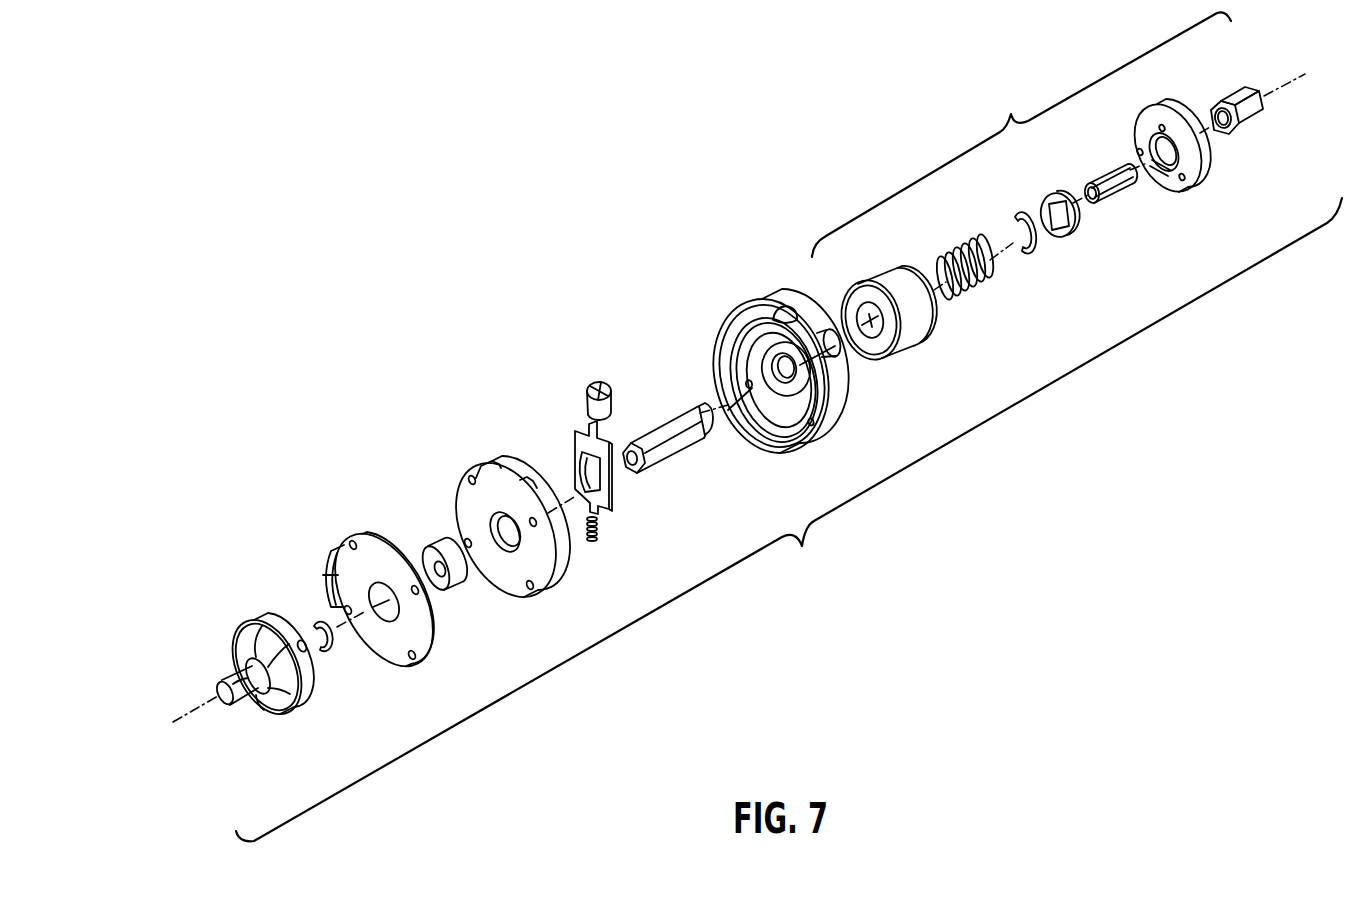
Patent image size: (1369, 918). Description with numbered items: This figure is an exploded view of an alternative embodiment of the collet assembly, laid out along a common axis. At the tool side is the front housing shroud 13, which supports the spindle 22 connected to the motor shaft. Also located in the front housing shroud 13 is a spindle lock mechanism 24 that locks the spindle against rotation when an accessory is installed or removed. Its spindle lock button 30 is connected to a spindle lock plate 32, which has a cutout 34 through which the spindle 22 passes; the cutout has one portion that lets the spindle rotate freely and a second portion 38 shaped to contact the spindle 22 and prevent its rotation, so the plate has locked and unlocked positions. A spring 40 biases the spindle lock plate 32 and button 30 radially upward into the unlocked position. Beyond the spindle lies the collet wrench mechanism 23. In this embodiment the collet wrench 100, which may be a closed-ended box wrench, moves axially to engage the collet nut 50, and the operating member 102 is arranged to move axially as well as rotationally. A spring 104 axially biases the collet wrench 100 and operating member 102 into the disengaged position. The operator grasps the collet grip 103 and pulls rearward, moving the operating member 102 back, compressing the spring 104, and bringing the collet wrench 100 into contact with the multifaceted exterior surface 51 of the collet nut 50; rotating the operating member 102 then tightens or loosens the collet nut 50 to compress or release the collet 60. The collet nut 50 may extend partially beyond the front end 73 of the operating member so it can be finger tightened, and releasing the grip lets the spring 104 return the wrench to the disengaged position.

The front housing shroud 13 is at (815, 440).
The spindle 22 is at (677, 451).
The collet wrench mechanism 23 is at (1021, 134).
The spindle lock mechanism 24 is at (588, 360).
The spindle lock button 30 is at (611, 400).
The spindle lock plate 32 is at (612, 505).
The cutout 34 is at (582, 477).
The second portion 38 is at (583, 459).
The spring 40 is at (591, 541).
The collet nut 50 is at (1247, 128).
The multifaceted exterior surface 51 is at (1236, 100).
The collet 60 is at (1117, 197).
The front end 73 is at (1188, 192).
The collet wrench 100 is at (1073, 228).
The operating member 102 is at (877, 347).
The collet grip 103 is at (914, 264).
The spring 104 is at (987, 277).